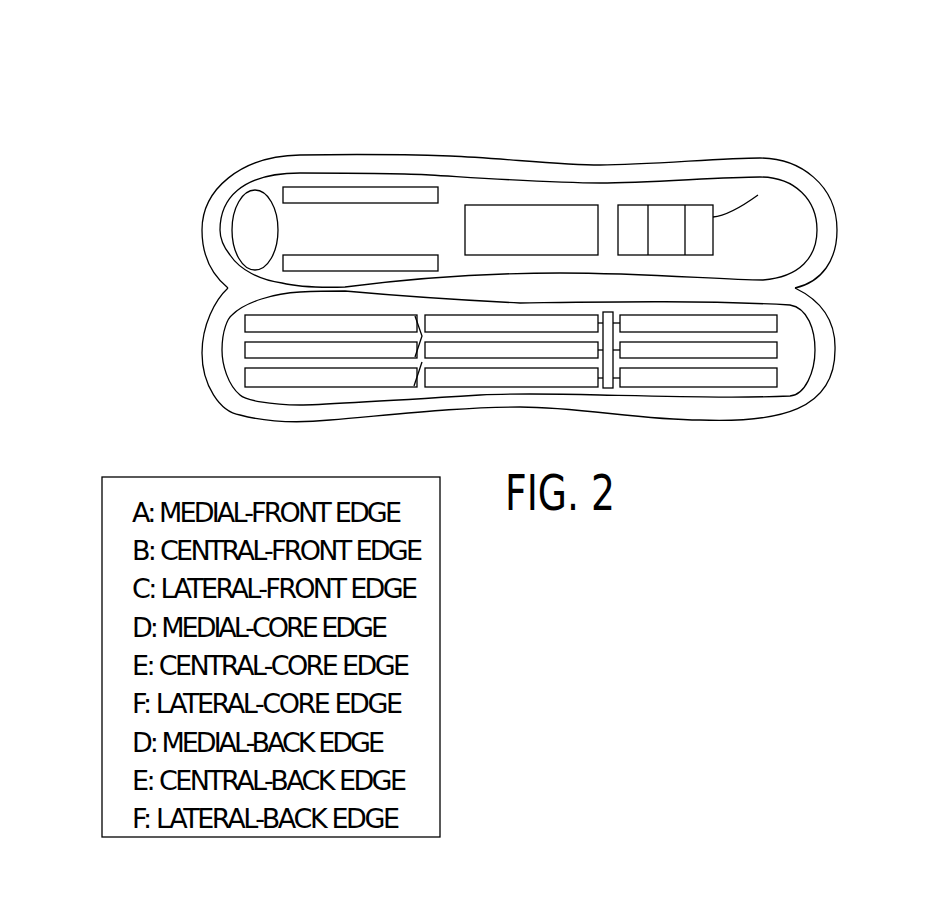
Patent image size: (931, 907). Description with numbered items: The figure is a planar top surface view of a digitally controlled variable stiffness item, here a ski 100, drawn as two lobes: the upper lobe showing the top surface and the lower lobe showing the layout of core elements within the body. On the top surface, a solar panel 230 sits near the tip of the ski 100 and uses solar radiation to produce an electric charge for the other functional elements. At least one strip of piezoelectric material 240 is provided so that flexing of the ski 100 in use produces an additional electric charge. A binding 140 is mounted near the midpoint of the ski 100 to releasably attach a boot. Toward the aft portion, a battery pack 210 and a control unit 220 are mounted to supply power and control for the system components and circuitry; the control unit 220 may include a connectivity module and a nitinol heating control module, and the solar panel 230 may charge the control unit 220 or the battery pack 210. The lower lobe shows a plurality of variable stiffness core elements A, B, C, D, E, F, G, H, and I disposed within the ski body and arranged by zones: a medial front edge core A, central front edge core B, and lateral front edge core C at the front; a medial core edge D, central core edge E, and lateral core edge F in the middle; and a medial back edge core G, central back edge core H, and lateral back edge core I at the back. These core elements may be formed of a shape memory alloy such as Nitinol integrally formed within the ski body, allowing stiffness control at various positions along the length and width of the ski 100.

The ski 100 is at (187, 189).
The binding 140 is at (487, 205).
The battery pack 210 is at (672, 205).
The control unit 220 is at (758, 195).
The solar panel 230 is at (255, 190).
The strip of piezoelectric material 240 is at (400, 187).
The medial front edge core A is at (323, 325).
The central front edge core B is at (323, 350).
The lateral front edge core C is at (323, 378).
The medial core edge D is at (557, 313).
The central core edge E is at (508, 358).
The lateral core edge F is at (540, 388).
The medial back edge core G is at (708, 325).
The central back edge core H is at (708, 350).
The lateral back edge core I is at (706, 378).